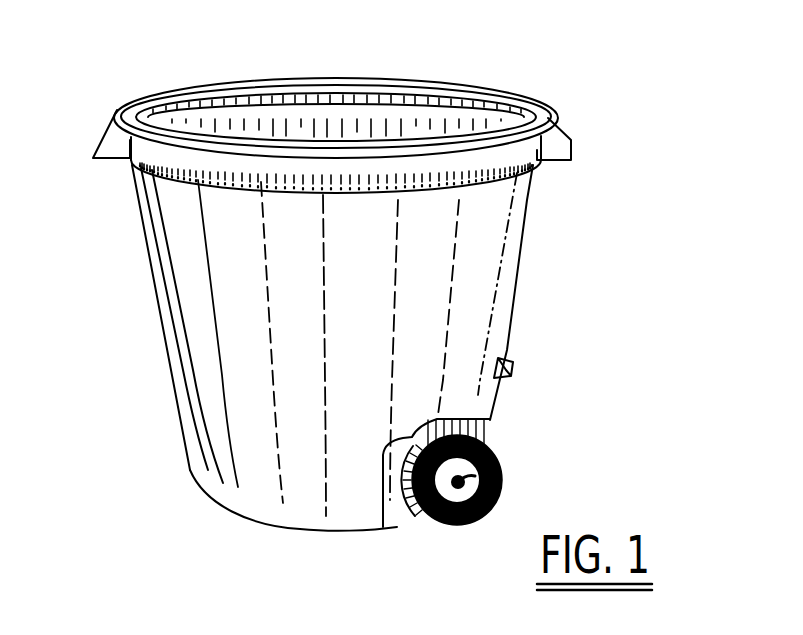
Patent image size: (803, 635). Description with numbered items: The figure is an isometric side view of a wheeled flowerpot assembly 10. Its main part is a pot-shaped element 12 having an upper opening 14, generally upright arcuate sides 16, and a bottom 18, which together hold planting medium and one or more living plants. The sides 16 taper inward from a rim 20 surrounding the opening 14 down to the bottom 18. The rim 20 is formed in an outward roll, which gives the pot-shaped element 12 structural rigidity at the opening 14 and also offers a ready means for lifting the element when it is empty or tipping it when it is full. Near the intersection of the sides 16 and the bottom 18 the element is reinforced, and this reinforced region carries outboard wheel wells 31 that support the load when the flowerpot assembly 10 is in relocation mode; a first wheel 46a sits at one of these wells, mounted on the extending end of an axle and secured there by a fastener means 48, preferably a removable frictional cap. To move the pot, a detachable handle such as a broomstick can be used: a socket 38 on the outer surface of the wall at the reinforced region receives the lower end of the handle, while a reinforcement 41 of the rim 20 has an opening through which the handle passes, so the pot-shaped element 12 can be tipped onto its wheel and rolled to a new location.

The wheeled flowerpot assembly 10 is at (587, 96).
The pot-shaped element 12 is at (144, 335).
The upper opening 14 is at (351, 128).
The sides 16 is at (243, 396).
The bottom 18 is at (298, 530).
The rim 20 is at (192, 148).
The wheel wells 31 is at (384, 528).
The socket 38 is at (513, 373).
The reinforcement 41 is at (572, 149).
The first wheel 46a is at (458, 527).
The fastener means 48 is at (503, 481).